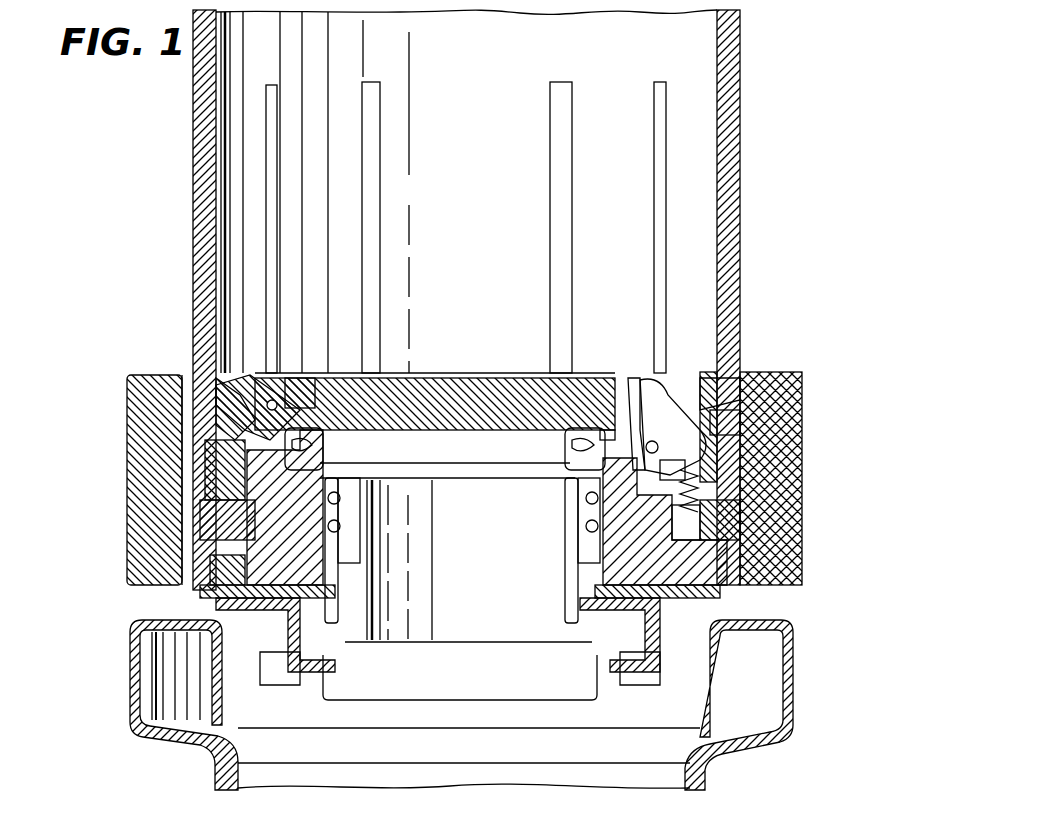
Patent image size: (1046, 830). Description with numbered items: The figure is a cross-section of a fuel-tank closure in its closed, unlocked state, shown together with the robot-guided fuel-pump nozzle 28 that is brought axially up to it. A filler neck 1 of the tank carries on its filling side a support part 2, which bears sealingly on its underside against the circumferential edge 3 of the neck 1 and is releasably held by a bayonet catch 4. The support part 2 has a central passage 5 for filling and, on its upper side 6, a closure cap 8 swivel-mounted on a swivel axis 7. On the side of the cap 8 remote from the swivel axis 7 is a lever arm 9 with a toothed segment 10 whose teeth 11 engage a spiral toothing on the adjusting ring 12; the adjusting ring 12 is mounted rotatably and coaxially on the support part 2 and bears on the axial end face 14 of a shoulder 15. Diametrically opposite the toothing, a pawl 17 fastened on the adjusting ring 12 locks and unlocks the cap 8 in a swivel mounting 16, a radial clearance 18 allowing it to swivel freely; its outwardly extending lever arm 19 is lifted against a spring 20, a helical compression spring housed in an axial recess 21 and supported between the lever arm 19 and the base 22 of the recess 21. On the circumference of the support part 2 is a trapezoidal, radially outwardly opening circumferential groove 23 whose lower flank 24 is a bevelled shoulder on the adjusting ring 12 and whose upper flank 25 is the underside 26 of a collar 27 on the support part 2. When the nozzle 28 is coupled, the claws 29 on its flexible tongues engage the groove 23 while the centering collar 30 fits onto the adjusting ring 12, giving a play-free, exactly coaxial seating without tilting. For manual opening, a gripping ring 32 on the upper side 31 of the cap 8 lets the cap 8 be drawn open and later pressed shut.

The filler neck 1 is at (805, 680).
The support part 2 is at (347, 600).
The circumferential edge 3 is at (225, 605).
The bayonet catch 4 is at (660, 655).
The central passage 5 is at (426, 571).
The upper side 6 is at (300, 373).
The swivel axis 7 is at (300, 368).
The closure cap 8 is at (565, 373).
The lever arm 9 is at (246, 370).
The toothed segment 10 is at (225, 452).
The teeth 11 is at (235, 410).
The adjusting ring 12 is at (215, 508).
The axial end face 14 is at (200, 545).
The shoulder 15 is at (215, 575).
The swivel mounting 16 is at (640, 398).
The pawl 17 is at (665, 395).
The radial clearance 18 is at (580, 522).
The lever arm 19 is at (575, 492).
The spring 20 is at (690, 540).
The axial recess 21 is at (725, 492).
The base 22 is at (575, 554).
The circumferential groove 23 is at (768, 425).
The lower flank 24 is at (690, 475).
The upper flank 25 is at (778, 392).
The underside 26 is at (735, 385).
The collar 27 is at (722, 372).
The fuel-pump nozzle 28 is at (752, 133).
The claw 29 is at (205, 447).
The centering collar 30 is at (720, 522).
The upper side 31 is at (440, 373).
The gripping ring 32 is at (492, 375).